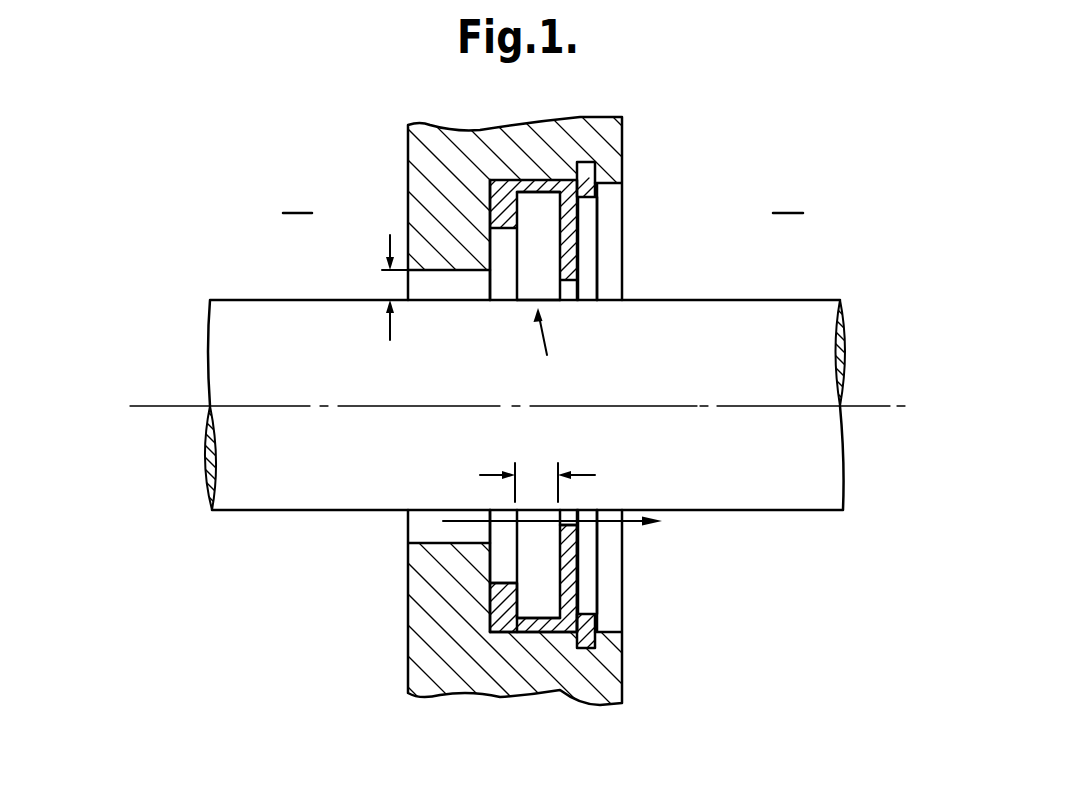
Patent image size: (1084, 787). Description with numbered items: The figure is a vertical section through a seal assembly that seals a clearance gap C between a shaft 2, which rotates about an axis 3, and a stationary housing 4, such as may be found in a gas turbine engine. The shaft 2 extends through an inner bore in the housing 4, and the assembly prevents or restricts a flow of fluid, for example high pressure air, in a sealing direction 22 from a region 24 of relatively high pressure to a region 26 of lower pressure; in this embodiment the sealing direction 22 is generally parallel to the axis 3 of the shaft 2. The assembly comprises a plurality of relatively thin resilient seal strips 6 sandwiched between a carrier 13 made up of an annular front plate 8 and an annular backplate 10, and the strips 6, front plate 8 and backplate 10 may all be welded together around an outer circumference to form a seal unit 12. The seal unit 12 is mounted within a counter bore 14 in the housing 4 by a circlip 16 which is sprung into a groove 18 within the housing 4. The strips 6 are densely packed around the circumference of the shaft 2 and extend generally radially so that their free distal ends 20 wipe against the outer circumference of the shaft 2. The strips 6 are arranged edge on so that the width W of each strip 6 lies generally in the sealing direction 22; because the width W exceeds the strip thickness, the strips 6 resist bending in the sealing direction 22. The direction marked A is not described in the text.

The shaft 2 is at (678, 330).
The axis 3 is at (862, 407).
The housing 4 is at (597, 133).
The seal strips 6 is at (537, 578).
The front plate 8 is at (500, 603).
The backplate 10 is at (567, 603).
The seal unit 12 is at (540, 180).
The carrier 13 is at (537, 630).
The counter bore 14 is at (490, 192).
The circlip 16 is at (597, 188).
The groove 18 is at (603, 648).
The free distal ends 20 is at (542, 292).
The sealing direction 22 is at (630, 523).
The region of relatively high pressure 24 is at (296, 199).
The region of lower pressure 26 is at (787, 199).
The direction arrow A is at (547, 348).
The clearance gap C is at (388, 288).
The width W is at (537, 471).